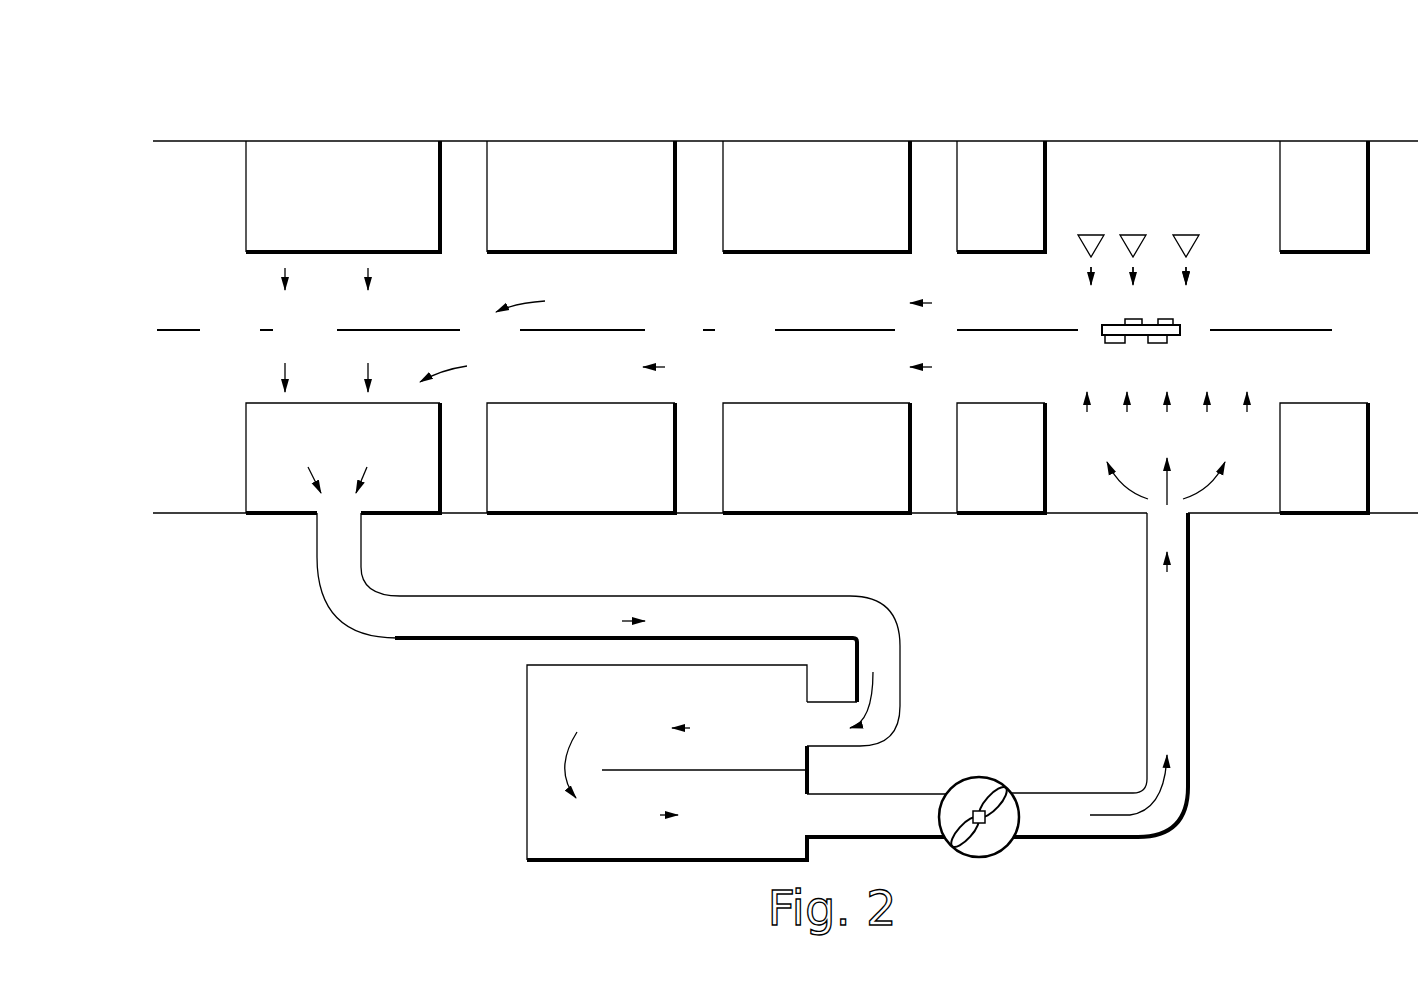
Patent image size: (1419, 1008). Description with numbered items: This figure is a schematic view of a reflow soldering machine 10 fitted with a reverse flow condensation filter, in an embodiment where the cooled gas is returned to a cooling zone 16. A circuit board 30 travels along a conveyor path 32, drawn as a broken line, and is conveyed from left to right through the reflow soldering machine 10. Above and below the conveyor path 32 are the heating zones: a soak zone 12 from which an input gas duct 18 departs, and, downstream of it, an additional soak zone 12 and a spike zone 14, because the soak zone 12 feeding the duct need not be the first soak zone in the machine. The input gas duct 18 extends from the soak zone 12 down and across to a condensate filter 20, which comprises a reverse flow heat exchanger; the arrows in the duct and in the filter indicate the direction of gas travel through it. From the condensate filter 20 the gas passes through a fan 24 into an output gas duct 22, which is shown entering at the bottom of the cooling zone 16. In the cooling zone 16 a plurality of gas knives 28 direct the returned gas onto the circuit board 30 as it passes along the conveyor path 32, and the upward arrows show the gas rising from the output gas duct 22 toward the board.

The reflow soldering machine 10 is at (880, 76).
The soak zone 12 is at (413, 273).
The spike zone 14 is at (856, 273).
The cooling zone 16 is at (1210, 270).
The input gas duct 18 is at (423, 634).
The condensate filter 20 is at (535, 775).
The output gas duct 22 is at (1190, 665).
The fan 24 is at (980, 777).
The gas knives 28 is at (1090, 233).
The circuit board 30 is at (1173, 340).
The conveyor path 32 is at (188, 330).